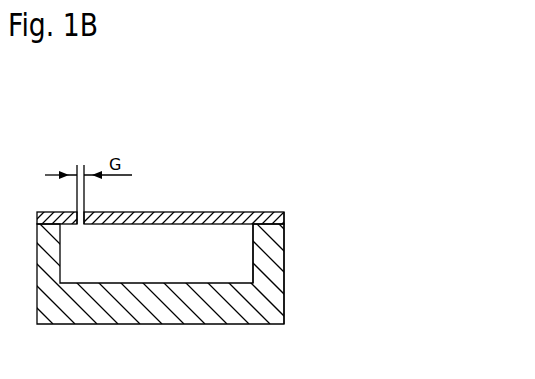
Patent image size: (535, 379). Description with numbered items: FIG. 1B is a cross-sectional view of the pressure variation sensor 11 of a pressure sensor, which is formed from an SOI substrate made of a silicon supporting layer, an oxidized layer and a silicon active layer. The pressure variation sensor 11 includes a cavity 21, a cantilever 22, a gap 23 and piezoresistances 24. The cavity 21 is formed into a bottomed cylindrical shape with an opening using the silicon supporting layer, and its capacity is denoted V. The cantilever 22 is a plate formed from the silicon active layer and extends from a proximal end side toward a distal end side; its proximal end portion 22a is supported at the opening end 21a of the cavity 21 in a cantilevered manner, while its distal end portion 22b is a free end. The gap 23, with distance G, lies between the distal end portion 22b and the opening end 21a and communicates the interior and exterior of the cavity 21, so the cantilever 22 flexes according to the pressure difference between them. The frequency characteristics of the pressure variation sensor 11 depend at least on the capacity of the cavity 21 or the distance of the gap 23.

The pressure variation sensor 11 is at (299, 135).
The cavity 21 is at (225, 265).
The opening end 21a is at (254, 232).
The cantilever 22 is at (182, 212).
The proximal end portion 22a is at (258, 212).
The distal end portion 22b is at (112, 212).
The gap 23 is at (78, 209).
The piezoresistances 24 is at (283, 214).